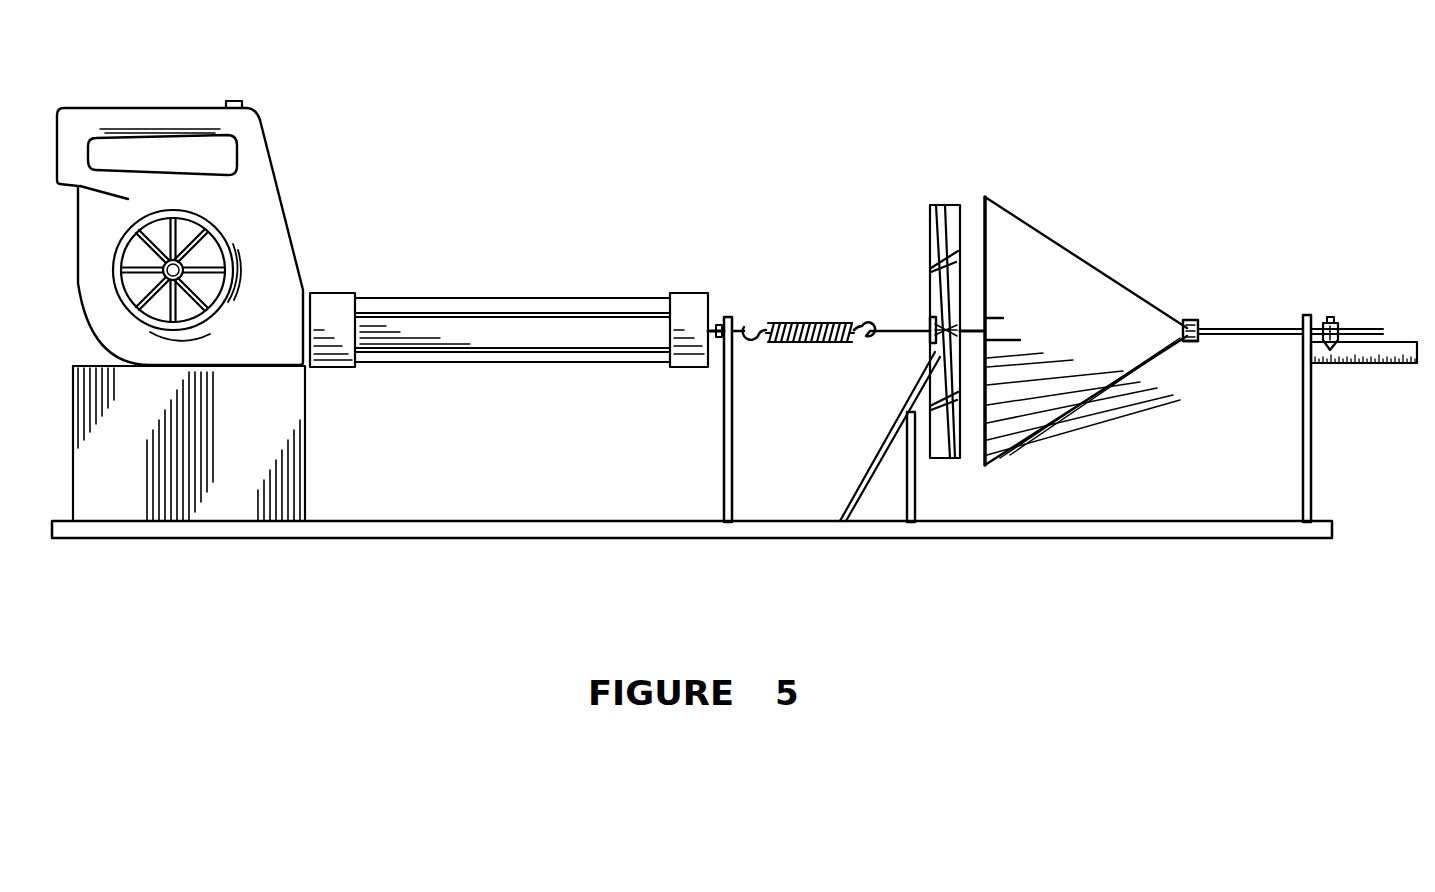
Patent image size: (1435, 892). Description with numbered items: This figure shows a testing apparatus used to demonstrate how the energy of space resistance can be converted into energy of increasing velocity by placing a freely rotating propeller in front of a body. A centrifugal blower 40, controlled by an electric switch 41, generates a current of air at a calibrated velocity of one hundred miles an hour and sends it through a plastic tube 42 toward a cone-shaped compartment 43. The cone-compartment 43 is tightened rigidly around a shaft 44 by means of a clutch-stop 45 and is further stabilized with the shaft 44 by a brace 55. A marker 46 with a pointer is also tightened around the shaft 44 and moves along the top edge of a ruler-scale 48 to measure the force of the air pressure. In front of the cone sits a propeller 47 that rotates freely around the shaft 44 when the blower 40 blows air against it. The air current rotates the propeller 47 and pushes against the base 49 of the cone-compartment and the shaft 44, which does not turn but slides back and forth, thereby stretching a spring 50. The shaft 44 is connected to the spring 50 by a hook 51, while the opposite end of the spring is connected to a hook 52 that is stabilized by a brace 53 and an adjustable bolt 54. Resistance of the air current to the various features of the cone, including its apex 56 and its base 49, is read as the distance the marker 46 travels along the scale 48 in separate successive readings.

The centrifugal blower 40 is at (335, 203).
The electric switch 41 is at (234, 100).
The plastic tube 42 is at (548, 307).
The cone-shaped compartment 43 is at (1052, 270).
The shaft 44 is at (1237, 330).
The clutch-stop 45 is at (1187, 322).
The marker 46 is at (1334, 320).
The propeller 47 is at (946, 213).
The ruler-scale 48 is at (1367, 350).
The base of cone-compartment 49 is at (978, 200).
The spring 50 is at (833, 325).
The hook 51 is at (858, 322).
The hook 52 is at (753, 343).
The brace 53 is at (723, 453).
The adjustable bolt 54 is at (716, 320).
The brace 55 is at (870, 462).
The apex of cone 56 is at (1187, 343).